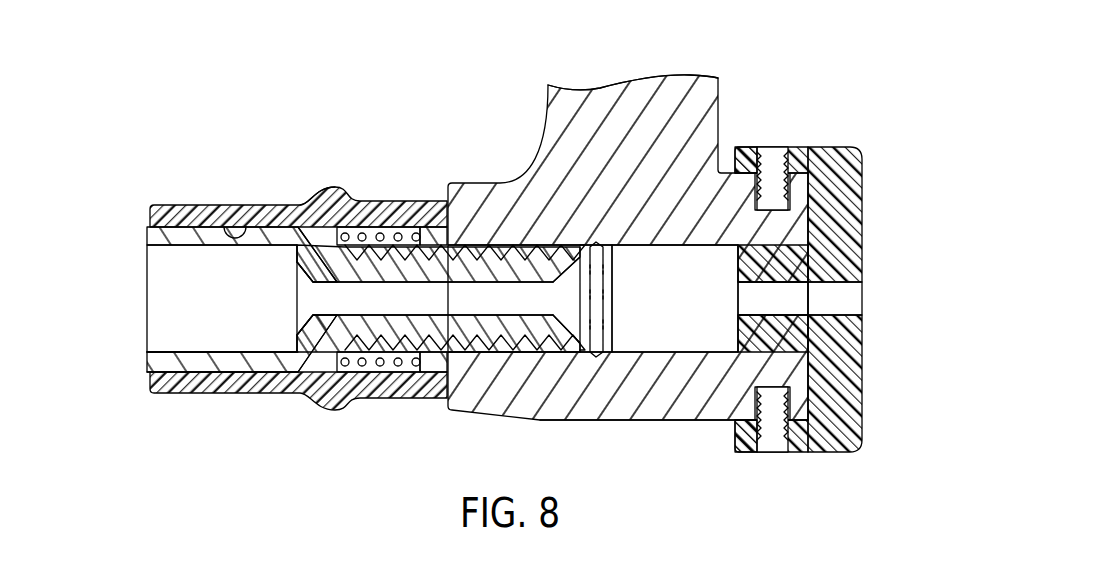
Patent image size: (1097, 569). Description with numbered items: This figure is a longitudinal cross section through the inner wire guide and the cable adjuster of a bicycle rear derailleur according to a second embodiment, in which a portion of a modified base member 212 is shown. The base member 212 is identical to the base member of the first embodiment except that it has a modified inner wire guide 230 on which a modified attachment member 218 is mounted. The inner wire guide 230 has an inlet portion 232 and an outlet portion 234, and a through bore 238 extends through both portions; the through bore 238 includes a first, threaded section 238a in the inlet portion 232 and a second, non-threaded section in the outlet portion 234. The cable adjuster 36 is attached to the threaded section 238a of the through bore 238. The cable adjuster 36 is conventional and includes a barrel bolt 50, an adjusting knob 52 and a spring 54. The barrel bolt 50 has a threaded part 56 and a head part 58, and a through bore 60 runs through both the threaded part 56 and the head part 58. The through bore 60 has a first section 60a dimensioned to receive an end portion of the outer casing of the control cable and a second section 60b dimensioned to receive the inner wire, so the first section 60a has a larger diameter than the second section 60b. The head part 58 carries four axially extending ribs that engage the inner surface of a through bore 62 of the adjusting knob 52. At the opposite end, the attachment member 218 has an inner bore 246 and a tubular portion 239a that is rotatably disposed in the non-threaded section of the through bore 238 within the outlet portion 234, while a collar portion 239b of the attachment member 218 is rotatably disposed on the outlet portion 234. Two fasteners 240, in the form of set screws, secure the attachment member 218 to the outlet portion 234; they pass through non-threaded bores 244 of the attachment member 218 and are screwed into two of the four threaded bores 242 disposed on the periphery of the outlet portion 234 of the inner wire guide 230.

The cable adjuster 36 is at (273, 188).
The barrel bolt 50 is at (190, 393).
The adjusting knob 52 is at (192, 193).
The spring 54 is at (358, 233).
The threaded part 56 is at (530, 348).
The head part 58 is at (240, 374).
The through bore 60 is at (200, 272).
The first section 60a is at (237, 352).
The second section 60b is at (318, 298).
The through bore 62 is at (235, 232).
The base member 212 is at (545, 104).
The attachment member 218 is at (862, 137).
The inner wire guide 230 is at (632, 424).
The inlet portion 232 is at (475, 183).
The outlet portion 234 is at (812, 378).
The through bore 238 is at (688, 357).
The first (threaded) section 238a is at (495, 247).
The tubular portion 239a is at (768, 262).
The collar portion 239b is at (745, 450).
The fasteners 240 is at (780, 147).
The threaded bores 242 is at (748, 265).
The non-threaded bores 244 is at (772, 147).
The inner bore 246 is at (848, 290).